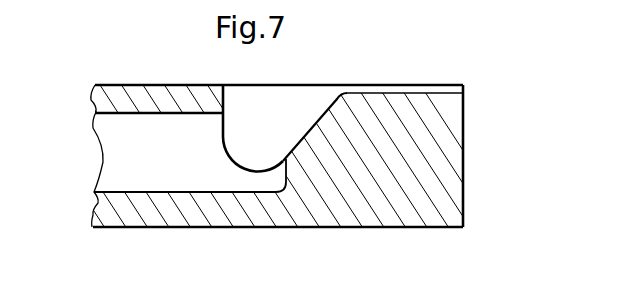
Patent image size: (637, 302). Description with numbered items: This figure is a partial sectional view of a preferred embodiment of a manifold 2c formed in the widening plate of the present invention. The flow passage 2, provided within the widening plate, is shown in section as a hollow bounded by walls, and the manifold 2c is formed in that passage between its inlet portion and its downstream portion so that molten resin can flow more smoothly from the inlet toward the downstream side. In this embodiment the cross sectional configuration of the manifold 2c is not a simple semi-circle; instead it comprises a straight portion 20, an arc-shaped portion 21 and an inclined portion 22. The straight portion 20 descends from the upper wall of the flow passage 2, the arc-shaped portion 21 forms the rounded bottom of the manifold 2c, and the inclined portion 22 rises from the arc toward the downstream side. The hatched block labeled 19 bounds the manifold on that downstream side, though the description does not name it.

The flow passage 2 is at (117, 150).
The manifold 2c is at (293, 128).
The end block 19 is at (443, 148).
The straight portion 20 is at (225, 120).
The arc-shaped portion 21 is at (236, 156).
The inclined portion 22 is at (337, 93).